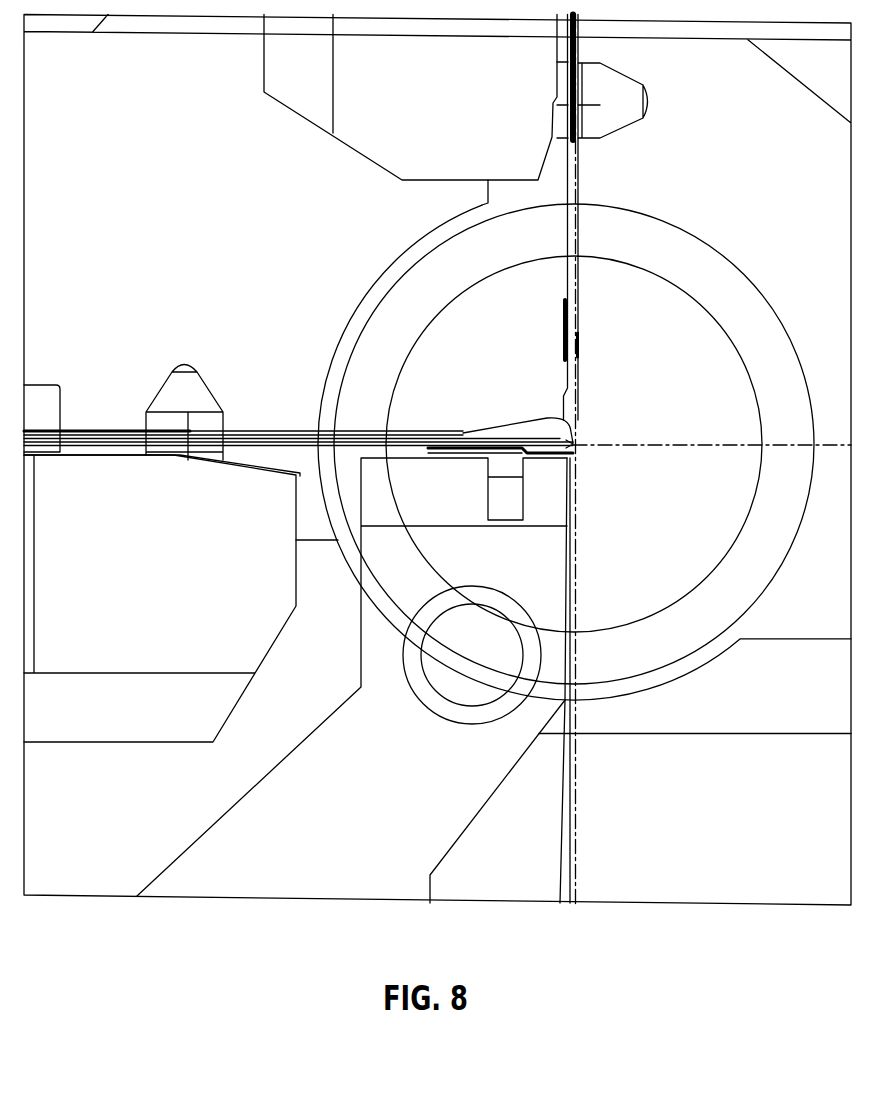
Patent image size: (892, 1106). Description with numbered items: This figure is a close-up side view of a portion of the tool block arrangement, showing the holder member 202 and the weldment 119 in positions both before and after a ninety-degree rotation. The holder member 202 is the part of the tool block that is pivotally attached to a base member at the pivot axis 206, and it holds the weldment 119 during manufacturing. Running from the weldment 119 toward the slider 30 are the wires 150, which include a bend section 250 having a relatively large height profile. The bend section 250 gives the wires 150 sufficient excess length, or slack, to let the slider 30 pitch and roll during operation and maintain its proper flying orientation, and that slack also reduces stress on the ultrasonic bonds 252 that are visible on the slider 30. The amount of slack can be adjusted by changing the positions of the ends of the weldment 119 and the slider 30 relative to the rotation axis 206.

The holder member 202 is at (467, 94).
The weldment 119 is at (277, 432).
The wires 150 is at (483, 428).
The bend section 250 is at (536, 418).
The pivot axis 206 is at (573, 444).
The ultrasonic bonds 252 is at (573, 450).
The slider 30 is at (500, 467).